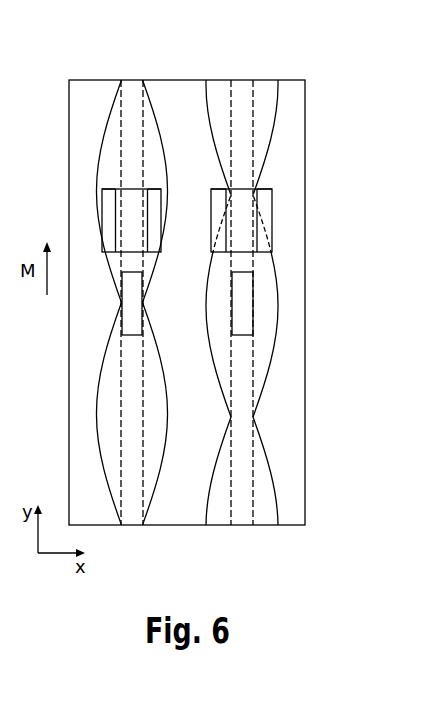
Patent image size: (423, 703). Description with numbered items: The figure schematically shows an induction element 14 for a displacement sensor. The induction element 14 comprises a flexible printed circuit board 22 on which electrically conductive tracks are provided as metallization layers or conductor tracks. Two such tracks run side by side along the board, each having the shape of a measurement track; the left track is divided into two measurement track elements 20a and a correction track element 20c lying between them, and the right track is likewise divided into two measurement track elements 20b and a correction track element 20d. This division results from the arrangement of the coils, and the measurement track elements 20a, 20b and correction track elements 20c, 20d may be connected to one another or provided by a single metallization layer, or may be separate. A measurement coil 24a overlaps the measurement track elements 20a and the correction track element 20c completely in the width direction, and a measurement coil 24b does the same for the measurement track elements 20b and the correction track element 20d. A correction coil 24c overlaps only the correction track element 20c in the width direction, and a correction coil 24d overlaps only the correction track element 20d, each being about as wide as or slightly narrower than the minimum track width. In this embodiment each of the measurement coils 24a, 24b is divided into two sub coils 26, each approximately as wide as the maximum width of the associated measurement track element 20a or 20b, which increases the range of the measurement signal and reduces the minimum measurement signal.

The induction element 14 is at (320, 75).
The measurement track element 20a is at (150, 130).
The measurement track element 20b is at (222, 132).
The correction track element 20c is at (131, 88).
The correction track element 20d is at (242, 88).
The printed circuit board 22 is at (175, 515).
The measurement coil 24a is at (130, 215).
The measurement coil 24b is at (247, 213).
The correction coil 24c is at (130, 318).
The correction coil 24d is at (245, 318).
The sub coil 26 is at (152, 188).